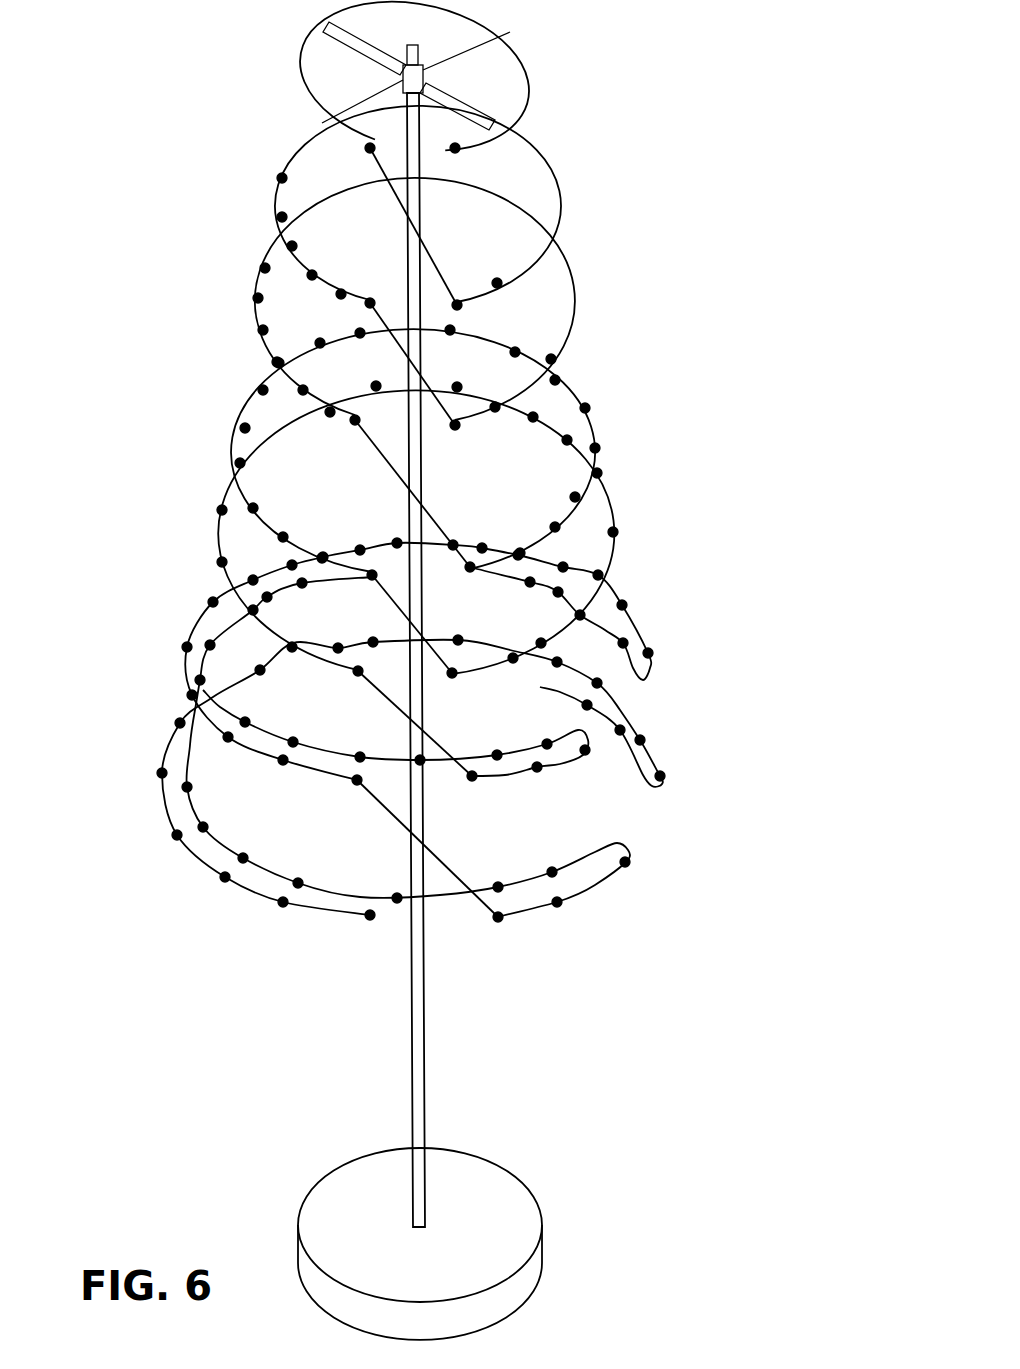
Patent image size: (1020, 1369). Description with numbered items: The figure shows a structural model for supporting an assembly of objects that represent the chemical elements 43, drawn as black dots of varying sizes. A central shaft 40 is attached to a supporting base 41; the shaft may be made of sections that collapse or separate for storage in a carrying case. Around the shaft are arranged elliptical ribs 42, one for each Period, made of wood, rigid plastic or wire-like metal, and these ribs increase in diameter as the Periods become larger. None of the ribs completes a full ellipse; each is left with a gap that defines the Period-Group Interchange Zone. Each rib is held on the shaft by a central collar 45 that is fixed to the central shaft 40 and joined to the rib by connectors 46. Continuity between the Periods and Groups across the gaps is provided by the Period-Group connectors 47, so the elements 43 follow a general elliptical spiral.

The central shaft 40 is at (430, 1073).
The supporting base 41 is at (480, 1205).
The elliptical ribs 42 is at (650, 650).
The elements 43 is at (603, 522).
The central collar 45 is at (400, 78).
The connectors 46 is at (470, 92).
The Period-Group connectors 47 is at (419, 195).